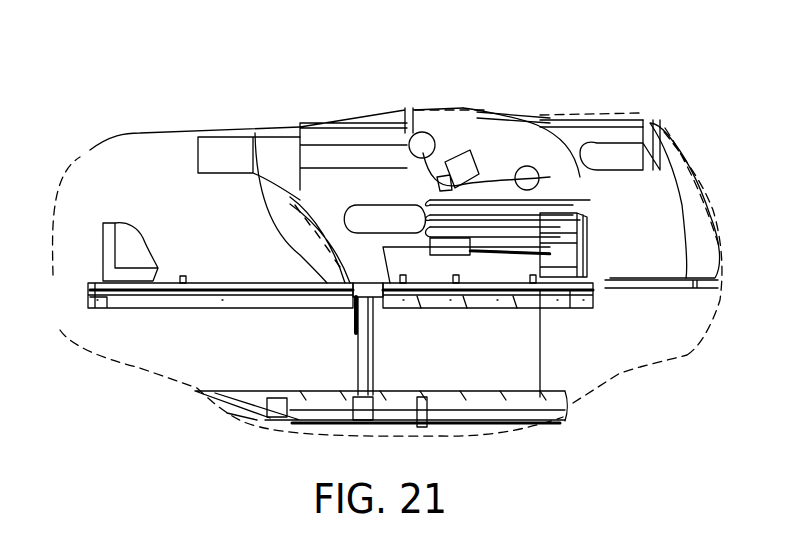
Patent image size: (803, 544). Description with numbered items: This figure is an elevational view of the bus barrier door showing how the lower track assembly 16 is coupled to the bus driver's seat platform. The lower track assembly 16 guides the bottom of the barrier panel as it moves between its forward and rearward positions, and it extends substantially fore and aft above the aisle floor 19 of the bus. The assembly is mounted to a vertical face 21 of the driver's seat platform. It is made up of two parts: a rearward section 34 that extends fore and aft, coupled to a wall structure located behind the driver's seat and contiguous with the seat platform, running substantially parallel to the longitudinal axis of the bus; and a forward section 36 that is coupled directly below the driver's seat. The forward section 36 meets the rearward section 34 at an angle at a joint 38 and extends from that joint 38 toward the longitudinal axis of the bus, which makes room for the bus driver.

The lower track assembly 16 is at (325, 370).
The aisle floor 19 is at (563, 393).
The vertical face of the driver's seat platform 21 is at (265, 364).
The rearward section 34 is at (130, 303).
The forward section 36 is at (570, 300).
The joint 38 is at (253, 128).